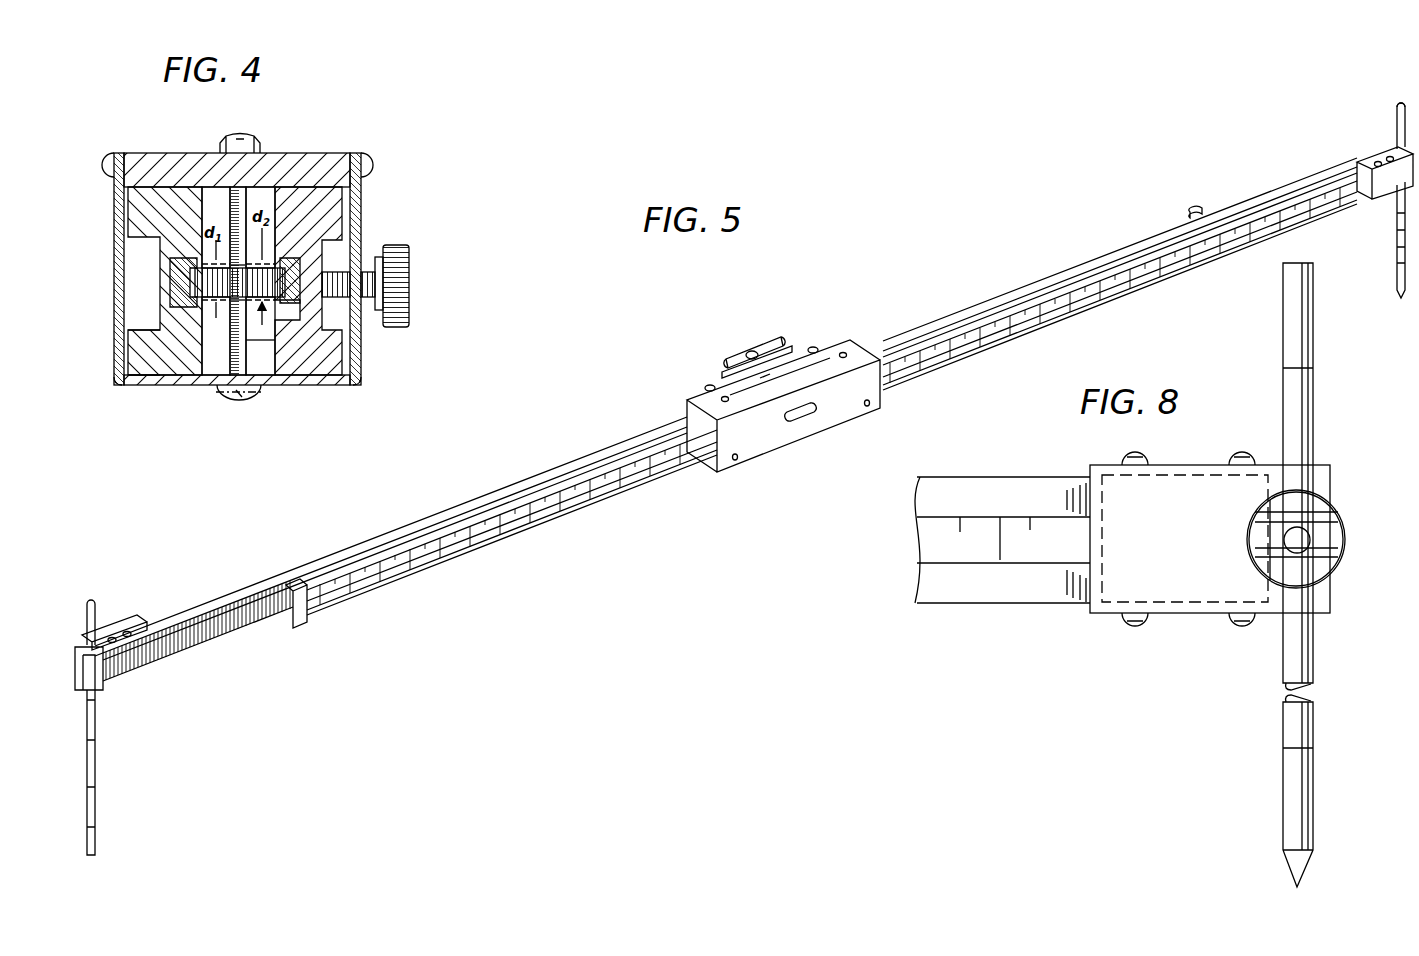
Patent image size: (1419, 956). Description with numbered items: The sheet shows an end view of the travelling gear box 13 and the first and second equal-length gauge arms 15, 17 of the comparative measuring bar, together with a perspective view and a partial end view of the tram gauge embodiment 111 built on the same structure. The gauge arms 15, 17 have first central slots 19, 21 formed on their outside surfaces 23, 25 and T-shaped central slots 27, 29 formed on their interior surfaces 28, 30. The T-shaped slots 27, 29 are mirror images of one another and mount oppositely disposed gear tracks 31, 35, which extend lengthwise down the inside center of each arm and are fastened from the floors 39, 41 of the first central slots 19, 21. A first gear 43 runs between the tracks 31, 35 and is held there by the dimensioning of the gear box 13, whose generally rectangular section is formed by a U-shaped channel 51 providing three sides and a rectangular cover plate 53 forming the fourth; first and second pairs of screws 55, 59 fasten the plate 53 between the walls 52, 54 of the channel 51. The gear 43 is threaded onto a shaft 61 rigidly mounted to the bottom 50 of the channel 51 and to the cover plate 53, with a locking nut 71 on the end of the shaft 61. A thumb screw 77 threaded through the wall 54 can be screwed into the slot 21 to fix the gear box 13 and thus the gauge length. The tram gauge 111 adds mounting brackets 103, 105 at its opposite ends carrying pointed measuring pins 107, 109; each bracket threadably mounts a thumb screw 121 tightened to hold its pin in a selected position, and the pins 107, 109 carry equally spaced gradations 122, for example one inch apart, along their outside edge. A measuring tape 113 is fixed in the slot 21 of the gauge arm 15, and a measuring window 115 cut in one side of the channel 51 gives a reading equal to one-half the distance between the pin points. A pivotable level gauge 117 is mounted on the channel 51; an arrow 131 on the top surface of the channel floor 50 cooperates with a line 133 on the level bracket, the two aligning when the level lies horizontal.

In FIG. 4, the travelling gear box 13 is at (382, 187).
In FIG. 4, the first gauge arm 15 is at (145, 336).
In FIG. 5, the first gauge arm 15 is at (385, 602).
In FIG. 4, the second gauge arm 17 is at (335, 336).
In FIG. 5, the second gauge arm 17 is at (167, 617).
In FIG. 4, the first central slot 19 is at (133, 220).
In FIG. 4, the first central slot 21 is at (409, 253).
In FIG. 4, the outside surface 23 is at (143, 379).
In FIG. 4, the outside surface 25 is at (352, 362).
In FIG. 4, the T-shaped central slot 27 is at (215, 322).
In FIG. 4, the interior surface 28 is at (262, 327).
In FIG. 4, the T-shaped central slot 29 is at (288, 332).
In FIG. 4, the interior surface 30 is at (270, 347).
In FIG. 4, the gear track 31 is at (185, 240).
In FIG. 5, the gear track 31 is at (220, 657).
In FIG. 4, the gear track 35 is at (292, 247).
In FIG. 5, the gear track 35 is at (292, 612).
In FIG. 4, the floor 39 is at (168, 260).
In FIG. 4, the floor 41 is at (368, 299).
In FIG. 4, the first gear 43 is at (268, 278).
In FIG. 4, the bottom of U-shaped channel 50 is at (225, 393).
In FIG. 5, the bottom of U-shaped channel 50 is at (827, 356).
In FIG. 4, the U-shaped channel 51 is at (356, 397).
In FIG. 5, the U-shaped channel 51 is at (686, 397).
In FIG. 4, the wall of U-shaped channel 52 is at (335, 293).
In FIG. 4, the rectangular cover plate 53 is at (317, 170).
In FIG. 4, the wall of U-shaped channel 54 is at (125, 379).
In FIG. 4, the first pair of screws 55 is at (372, 161).
In FIG. 4, the second pair of screws 59 is at (106, 161).
In FIG. 4, the shaft 61 is at (238, 347).
In FIG. 4, the locking nut 71 is at (260, 143).
In FIG. 4, the second thumb screw 77 is at (378, 286).
In FIG. 5, the mounting bracket 103 is at (132, 690).
In FIG. 5, the mounting bracket 105 is at (1385, 196).
In FIG. 8, the mounting bracket 105 is at (1200, 465).
In FIG. 5, the measuring pin 107 is at (100, 842).
In FIG. 5, the measuring pin 109 is at (1397, 286).
In FIG. 8, the measuring pin 109 is at (1288, 802).
In FIG. 5, the tram gauge embodiment 111 is at (870, 314).
In FIG. 5, the measuring tape 113 is at (544, 514).
In FIG. 5, the measuring window 115 is at (815, 409).
In FIG. 5, the pivotable level gauge 117 is at (768, 335).
In FIG. 5, the thumb screw 121 is at (1401, 103).
In FIG. 5, the gradations 122 is at (100, 785).
In FIG. 8, the gradations 122 is at (1283, 760).
In FIG. 5, the arrow 131 is at (771, 390).
In FIG. 5, the line 133 is at (746, 358).